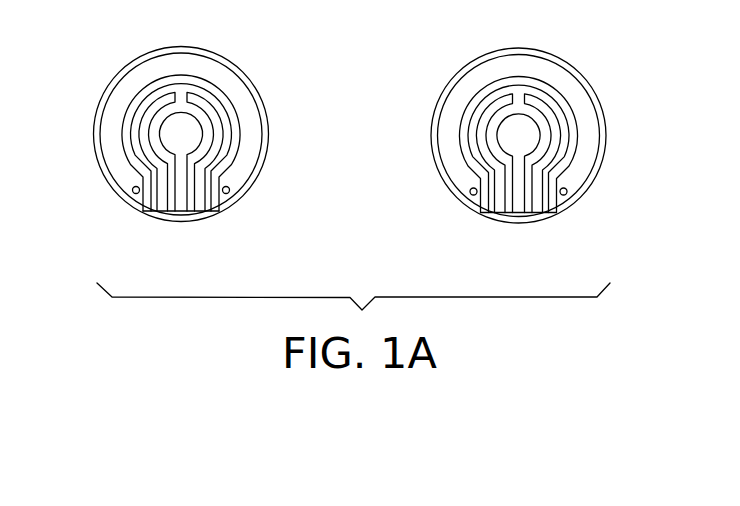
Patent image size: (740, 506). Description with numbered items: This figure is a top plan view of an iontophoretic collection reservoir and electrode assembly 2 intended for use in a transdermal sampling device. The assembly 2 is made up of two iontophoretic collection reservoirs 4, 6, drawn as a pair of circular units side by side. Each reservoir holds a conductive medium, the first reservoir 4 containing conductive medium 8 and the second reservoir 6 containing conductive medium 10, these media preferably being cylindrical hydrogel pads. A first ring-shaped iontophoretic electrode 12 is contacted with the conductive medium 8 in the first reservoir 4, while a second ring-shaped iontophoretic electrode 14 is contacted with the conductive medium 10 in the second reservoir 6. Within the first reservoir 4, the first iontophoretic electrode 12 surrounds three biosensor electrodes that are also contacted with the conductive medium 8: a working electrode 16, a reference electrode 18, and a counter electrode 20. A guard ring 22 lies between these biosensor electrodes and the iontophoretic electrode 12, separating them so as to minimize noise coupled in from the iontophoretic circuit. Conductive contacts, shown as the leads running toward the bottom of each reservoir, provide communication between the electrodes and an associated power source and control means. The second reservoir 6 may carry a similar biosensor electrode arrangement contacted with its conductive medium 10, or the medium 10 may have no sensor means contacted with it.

The iontophoretic collection reservoir and electrode assembly 2 is at (173, 298).
The iontophoretic collection reservoir 4 is at (233, 212).
The iontophoretic collection reservoir 6 is at (567, 213).
The conductive medium 8 is at (180, 218).
The conductive medium 10 is at (517, 221).
The first ring-shaped iontophoretic electrode 12 is at (232, 83).
The second ring-shaped iontophoretic electrode 14 is at (579, 97).
The working electrode 16 is at (180, 75).
The reference electrode 18 is at (149, 137).
The counter electrode 20 is at (223, 136).
The guard ring 22 is at (150, 93).